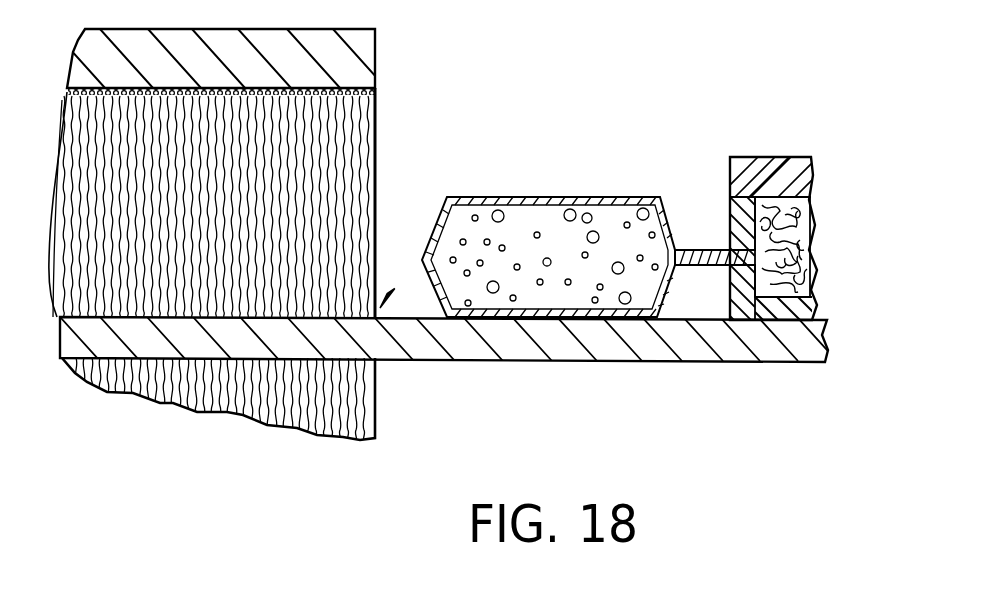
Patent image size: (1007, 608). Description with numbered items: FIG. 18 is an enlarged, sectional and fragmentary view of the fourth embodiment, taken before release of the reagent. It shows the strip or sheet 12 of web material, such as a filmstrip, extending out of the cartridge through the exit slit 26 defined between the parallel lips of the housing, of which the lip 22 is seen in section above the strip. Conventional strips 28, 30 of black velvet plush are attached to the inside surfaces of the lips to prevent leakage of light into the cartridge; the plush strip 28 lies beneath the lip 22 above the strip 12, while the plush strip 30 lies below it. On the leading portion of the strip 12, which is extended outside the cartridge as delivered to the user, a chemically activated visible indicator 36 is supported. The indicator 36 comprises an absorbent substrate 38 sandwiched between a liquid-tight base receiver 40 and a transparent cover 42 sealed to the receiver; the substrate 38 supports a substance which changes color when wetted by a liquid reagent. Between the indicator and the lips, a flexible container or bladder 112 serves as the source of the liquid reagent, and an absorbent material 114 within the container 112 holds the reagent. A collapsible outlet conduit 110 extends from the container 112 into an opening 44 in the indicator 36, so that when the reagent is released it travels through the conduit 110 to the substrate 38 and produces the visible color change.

The strip or sheet of web material 12 is at (553, 343).
The lip 22 is at (360, 49).
The exit slit 26 is at (394, 290).
The strip of black velvet plush 28 is at (330, 144).
The strip of black velvet plush 30 is at (350, 403).
The chemically activated visible indicator 36 is at (814, 171).
The absorbent substrate 38 is at (814, 233).
The liquid-tight base receiver 40 is at (793, 310).
The transparent cover 42 is at (758, 165).
The opening 44 is at (729, 285).
The collapsible outlet conduit 110 is at (702, 250).
The flexible container or bladder 112 is at (477, 195).
The absorbent material 114 is at (610, 290).